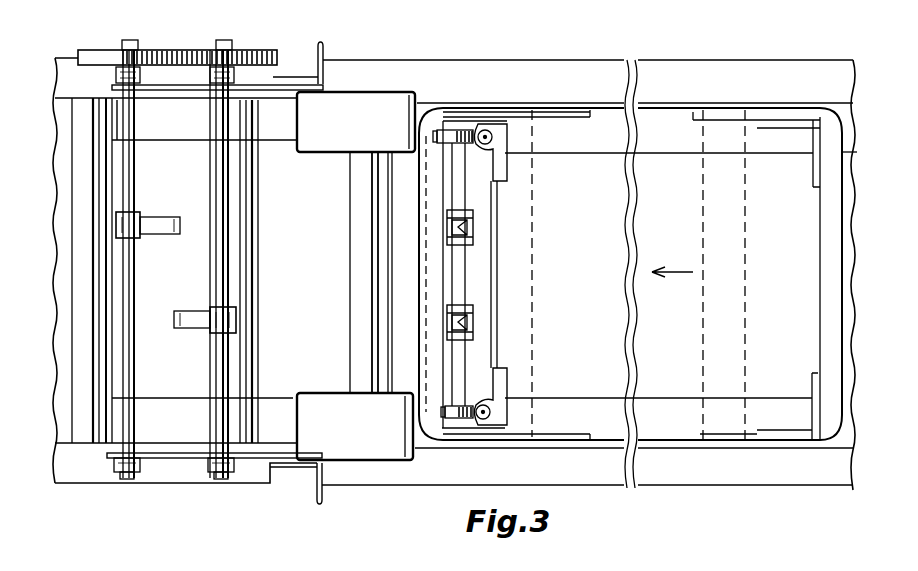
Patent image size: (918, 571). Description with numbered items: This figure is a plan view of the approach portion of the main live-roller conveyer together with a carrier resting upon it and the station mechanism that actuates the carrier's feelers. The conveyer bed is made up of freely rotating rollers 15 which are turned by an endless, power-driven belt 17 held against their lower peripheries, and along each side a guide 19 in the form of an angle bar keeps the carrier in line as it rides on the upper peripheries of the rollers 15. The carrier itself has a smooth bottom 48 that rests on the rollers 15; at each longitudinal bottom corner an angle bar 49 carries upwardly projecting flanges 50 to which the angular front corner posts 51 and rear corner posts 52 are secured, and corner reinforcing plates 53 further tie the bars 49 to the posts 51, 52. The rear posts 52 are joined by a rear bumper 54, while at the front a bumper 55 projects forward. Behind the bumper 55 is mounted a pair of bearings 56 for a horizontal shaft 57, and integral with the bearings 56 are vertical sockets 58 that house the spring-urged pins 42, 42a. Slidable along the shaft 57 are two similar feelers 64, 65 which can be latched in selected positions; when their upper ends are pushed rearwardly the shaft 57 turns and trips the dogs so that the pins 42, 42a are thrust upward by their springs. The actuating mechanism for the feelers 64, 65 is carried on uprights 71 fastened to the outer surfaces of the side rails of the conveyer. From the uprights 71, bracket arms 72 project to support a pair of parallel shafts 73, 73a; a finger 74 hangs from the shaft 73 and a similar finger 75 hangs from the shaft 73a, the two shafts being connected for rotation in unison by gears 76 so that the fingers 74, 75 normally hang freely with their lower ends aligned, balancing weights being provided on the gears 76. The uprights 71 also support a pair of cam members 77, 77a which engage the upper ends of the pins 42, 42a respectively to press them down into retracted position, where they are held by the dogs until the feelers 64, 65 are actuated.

The rollers 15 is at (345, 351).
The endless power-driven belt 17 is at (297, 327).
The guide 19 is at (376, 482).
The pin 42 is at (482, 422).
The pin 42a is at (487, 137).
The smooth bottom 48 is at (695, 275).
The angle bar 49 is at (607, 137).
The upwardly projecting flanges 50 is at (612, 110).
The front corner posts 51 is at (500, 413).
The rear corner posts 52 is at (812, 390).
The corner reinforcing plates 53 is at (693, 118).
The rear bumper 54 is at (840, 297).
The bumper 55 is at (430, 248).
The bearings 56 is at (470, 130).
The horizontal shaft 57 is at (460, 270).
The vertical sockets 58 is at (493, 147).
The feeler 64 is at (460, 323).
The feeler 65 is at (460, 228).
The uprights 71 is at (323, 50).
The bracket arms 72 is at (270, 92).
The shaft 73 is at (222, 199).
The shaft 73a is at (130, 193).
The finger 74 is at (193, 318).
The finger 75 is at (157, 235).
The gears 76 is at (203, 50).
The cam member 77 is at (355, 426).
The cam member 77a is at (356, 122).